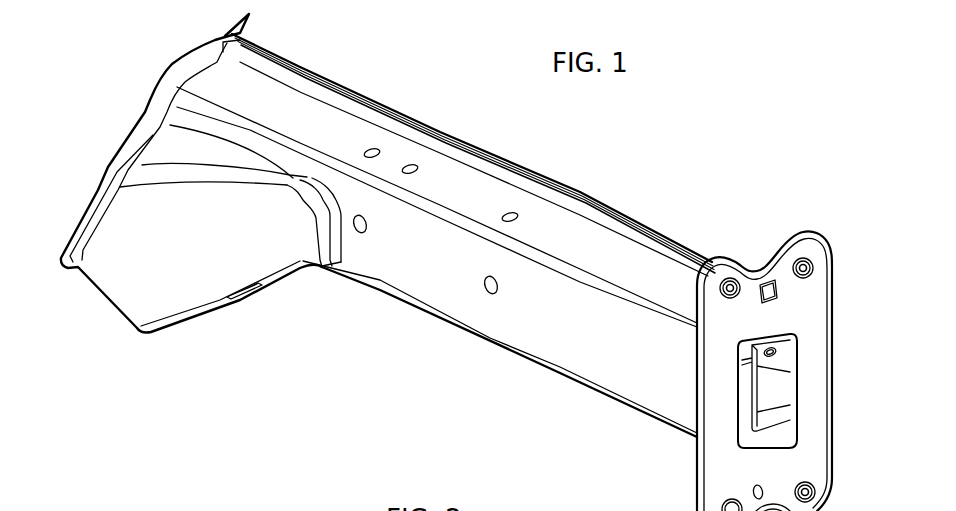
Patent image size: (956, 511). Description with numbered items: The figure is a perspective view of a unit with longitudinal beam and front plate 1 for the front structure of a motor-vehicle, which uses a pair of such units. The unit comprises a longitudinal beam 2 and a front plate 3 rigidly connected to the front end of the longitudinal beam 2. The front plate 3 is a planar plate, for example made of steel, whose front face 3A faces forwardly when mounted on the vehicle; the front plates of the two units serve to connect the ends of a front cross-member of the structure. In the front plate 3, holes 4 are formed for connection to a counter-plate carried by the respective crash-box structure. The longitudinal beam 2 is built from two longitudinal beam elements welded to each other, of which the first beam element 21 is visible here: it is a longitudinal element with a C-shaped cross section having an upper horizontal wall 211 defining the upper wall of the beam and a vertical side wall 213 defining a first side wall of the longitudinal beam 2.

The unit with longitudinal beam and front plate 1 is at (318, 332).
The longitudinal beam 2 is at (493, 346).
The first beam element 21 is at (643, 380).
The upper horizontal wall 211 is at (611, 249).
The vertical side wall 213 is at (415, 262).
The front plate 3 is at (783, 338).
The front face 3A is at (808, 443).
The holes 4 is at (803, 263).